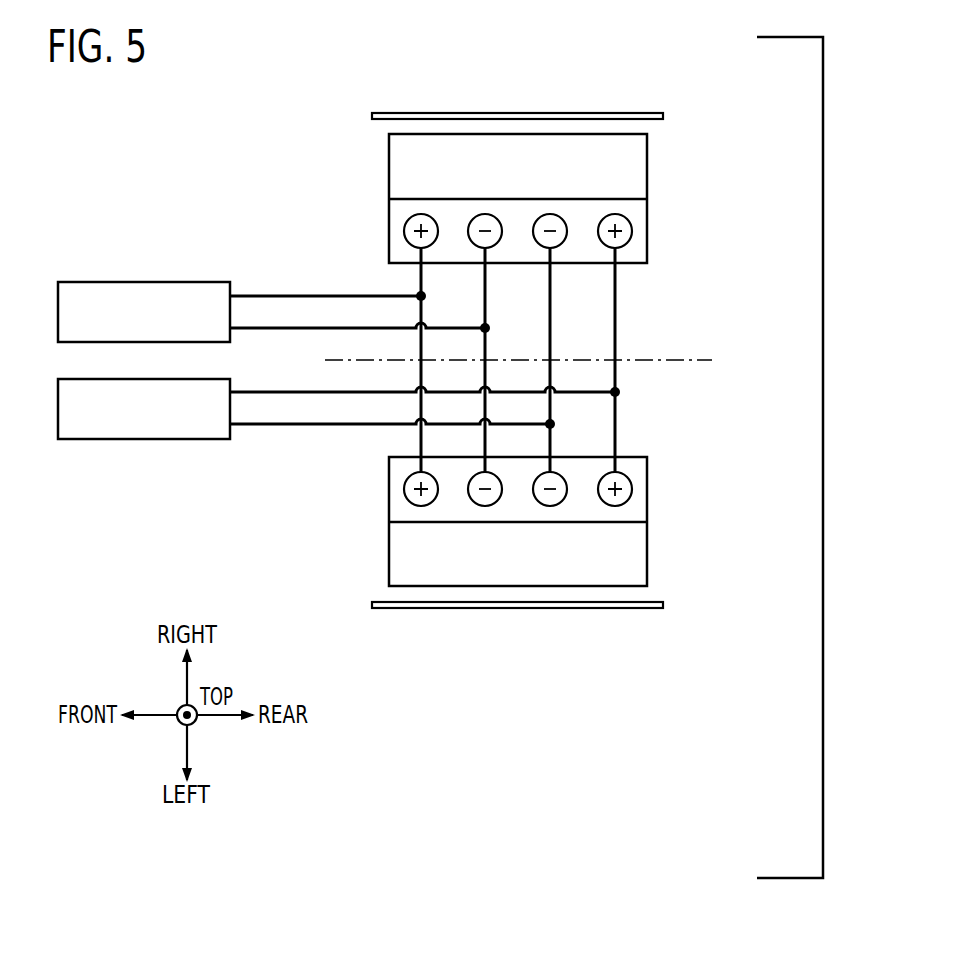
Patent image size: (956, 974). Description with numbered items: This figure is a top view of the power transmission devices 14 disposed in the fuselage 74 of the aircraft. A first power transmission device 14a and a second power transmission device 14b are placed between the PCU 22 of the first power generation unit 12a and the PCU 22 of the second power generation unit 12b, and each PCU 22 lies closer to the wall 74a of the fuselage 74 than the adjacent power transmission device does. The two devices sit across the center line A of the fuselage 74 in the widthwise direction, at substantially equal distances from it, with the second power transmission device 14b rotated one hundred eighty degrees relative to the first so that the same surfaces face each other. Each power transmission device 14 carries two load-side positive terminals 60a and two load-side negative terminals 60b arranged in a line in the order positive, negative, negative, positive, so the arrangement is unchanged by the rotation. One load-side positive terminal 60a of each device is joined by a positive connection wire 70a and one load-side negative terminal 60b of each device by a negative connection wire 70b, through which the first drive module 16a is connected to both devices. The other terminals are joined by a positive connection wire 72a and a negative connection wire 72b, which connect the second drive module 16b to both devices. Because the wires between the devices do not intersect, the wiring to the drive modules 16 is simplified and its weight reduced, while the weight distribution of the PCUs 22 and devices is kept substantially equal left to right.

The fuselage 74 is at (524, 344).
The wall 74a is at (631, 112).
The power control unit 22 is at (441, 165).
The second power generation unit 12b is at (441, 165).
The first power generation unit 12a is at (596, 557).
The power transmission device 14 is at (519, 362).
The second power transmission device 14b is at (367, 218).
The first power transmission device 14a is at (670, 509).
The load-side positive terminal 60a is at (421, 213).
The load-side negative terminal 60b is at (485, 213).
The positive connection wire 70a is at (421, 282).
The negative connection wire 70b is at (485, 353).
The positive connection wire 72a is at (615, 300).
The negative connection wire 72b is at (550, 340).
The drive module 16 is at (144, 361).
The first drive module 16a is at (117, 282).
The second drive module 16b is at (117, 440).
The center line A is at (529, 363).